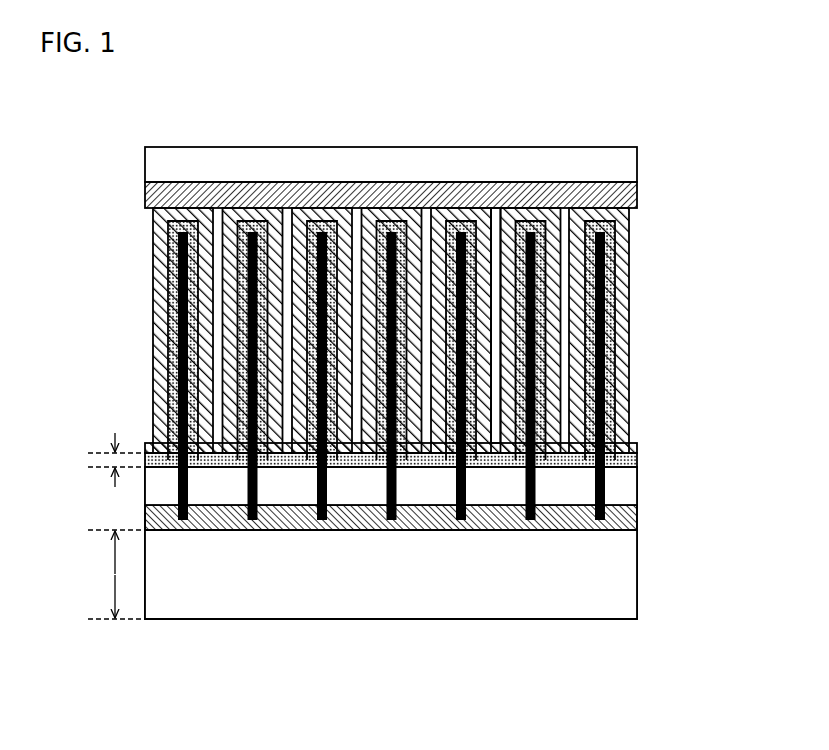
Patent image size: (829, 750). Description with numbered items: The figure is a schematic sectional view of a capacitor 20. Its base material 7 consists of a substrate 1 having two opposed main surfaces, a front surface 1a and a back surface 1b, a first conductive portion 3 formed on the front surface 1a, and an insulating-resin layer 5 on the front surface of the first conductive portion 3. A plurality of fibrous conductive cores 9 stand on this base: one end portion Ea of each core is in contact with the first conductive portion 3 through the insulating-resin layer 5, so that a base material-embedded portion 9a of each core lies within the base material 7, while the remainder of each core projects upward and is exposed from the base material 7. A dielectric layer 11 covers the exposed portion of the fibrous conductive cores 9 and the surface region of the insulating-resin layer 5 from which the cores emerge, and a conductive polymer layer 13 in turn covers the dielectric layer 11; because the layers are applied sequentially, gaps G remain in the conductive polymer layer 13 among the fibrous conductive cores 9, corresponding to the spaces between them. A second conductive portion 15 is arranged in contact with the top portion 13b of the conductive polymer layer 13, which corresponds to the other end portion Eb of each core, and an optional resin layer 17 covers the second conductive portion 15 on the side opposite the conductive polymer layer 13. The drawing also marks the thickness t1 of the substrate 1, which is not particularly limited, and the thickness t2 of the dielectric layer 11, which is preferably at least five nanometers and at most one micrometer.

The substrate 1 is at (620, 565).
The main surface (front surface) 1a is at (365, 533).
The main surface (back surface) 1b is at (365, 620).
The first conductive portion 3 is at (632, 510).
The insulating-resin layer 5 is at (622, 484).
The base material 7 is at (737, 473).
The fibrous conductive cores 9 is at (604, 392).
The base material-embedded portion 9a is at (624, 483).
The dielectric layer 11 is at (613, 342).
The conductive polymer layer 13 is at (628, 285).
The top portion of the conductive polymer layer 13b is at (531, 205).
The second conductive portion 15 is at (637, 188).
The resin layer 17 is at (622, 162).
The capacitor 20 is at (653, 651).
The gaps G is at (494, 232).
The one end portion of fibrous conductive core Ea is at (613, 535).
The other end portion of fibrous conductive core Eb is at (628, 228).
The thickness of substrate t1 is at (115, 574).
The thickness of dielectric layer t2 is at (115, 448).